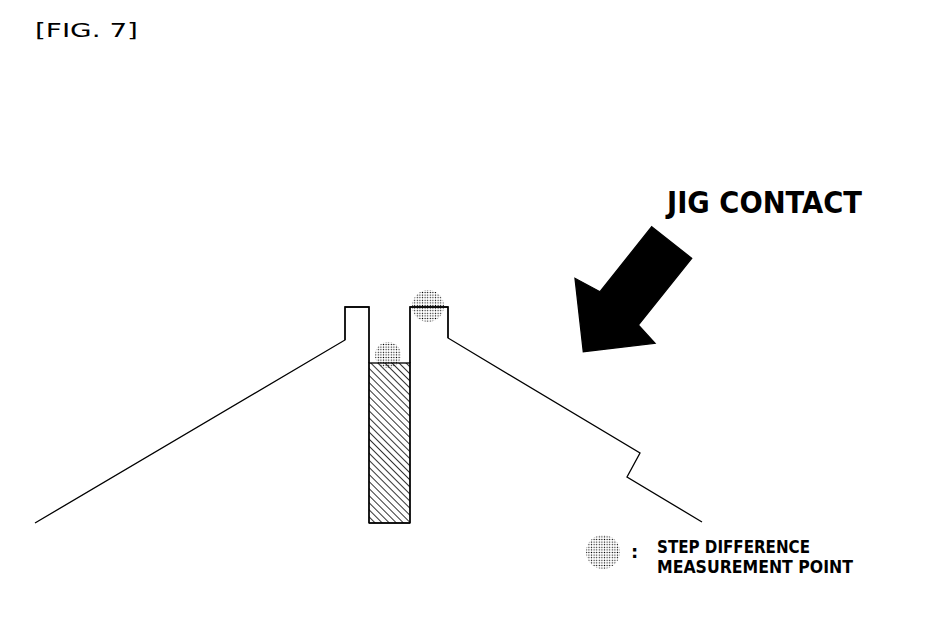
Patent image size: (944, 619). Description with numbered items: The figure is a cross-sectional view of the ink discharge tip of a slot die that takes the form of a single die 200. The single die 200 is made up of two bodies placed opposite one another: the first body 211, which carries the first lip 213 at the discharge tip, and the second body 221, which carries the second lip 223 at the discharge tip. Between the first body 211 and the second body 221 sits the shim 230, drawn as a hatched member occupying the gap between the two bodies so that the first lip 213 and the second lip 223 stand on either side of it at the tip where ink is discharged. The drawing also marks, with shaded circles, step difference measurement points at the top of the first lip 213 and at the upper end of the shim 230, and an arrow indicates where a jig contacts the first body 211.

The single die 200 is at (158, 177).
The first body 211 is at (528, 443).
The first lip 213 is at (430, 333).
The second body 221 is at (165, 495).
The second lip 223 is at (353, 322).
The shim 230 is at (387, 437).